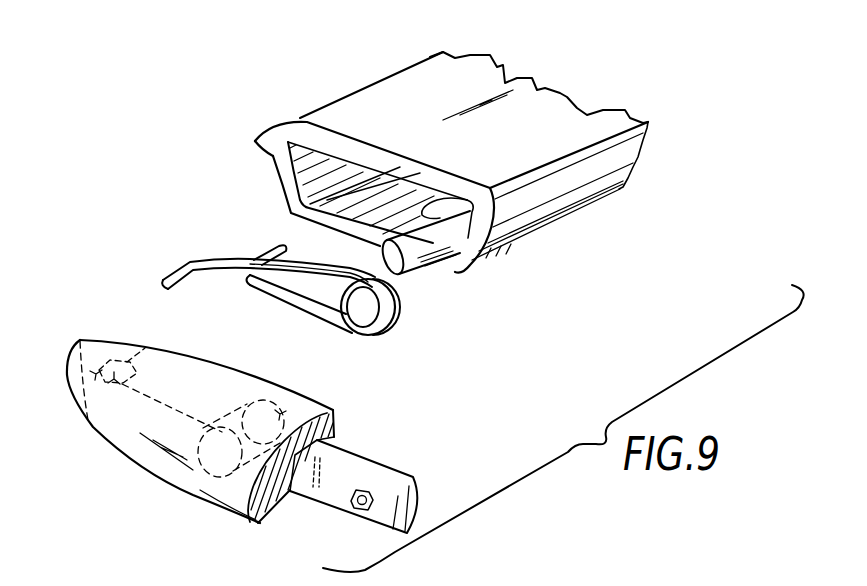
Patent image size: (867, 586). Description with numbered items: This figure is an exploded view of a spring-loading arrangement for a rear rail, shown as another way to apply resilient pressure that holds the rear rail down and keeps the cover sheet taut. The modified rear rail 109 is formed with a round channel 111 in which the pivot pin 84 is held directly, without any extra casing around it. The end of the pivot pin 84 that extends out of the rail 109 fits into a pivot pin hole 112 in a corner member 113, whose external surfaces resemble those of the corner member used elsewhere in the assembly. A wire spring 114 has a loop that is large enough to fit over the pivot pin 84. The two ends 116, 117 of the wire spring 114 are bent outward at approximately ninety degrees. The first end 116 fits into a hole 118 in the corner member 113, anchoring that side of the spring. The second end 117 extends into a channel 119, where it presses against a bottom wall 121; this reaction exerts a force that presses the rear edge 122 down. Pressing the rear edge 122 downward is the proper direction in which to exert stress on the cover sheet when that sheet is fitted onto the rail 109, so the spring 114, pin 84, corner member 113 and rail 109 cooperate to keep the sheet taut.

The pivot pin 84 is at (427, 264).
The rear rail 109 is at (367, 87).
The round channel 111 is at (467, 263).
The pivot pin hole 112 is at (278, 406).
The corner member 113 is at (82, 410).
The wire spring 114 is at (305, 312).
The spring end 116 is at (165, 282).
The spring end 117 is at (262, 255).
The hole 118 is at (153, 343).
The channel 119 is at (301, 192).
The bottom wall 121 is at (364, 215).
The rear edge 122 is at (255, 141).